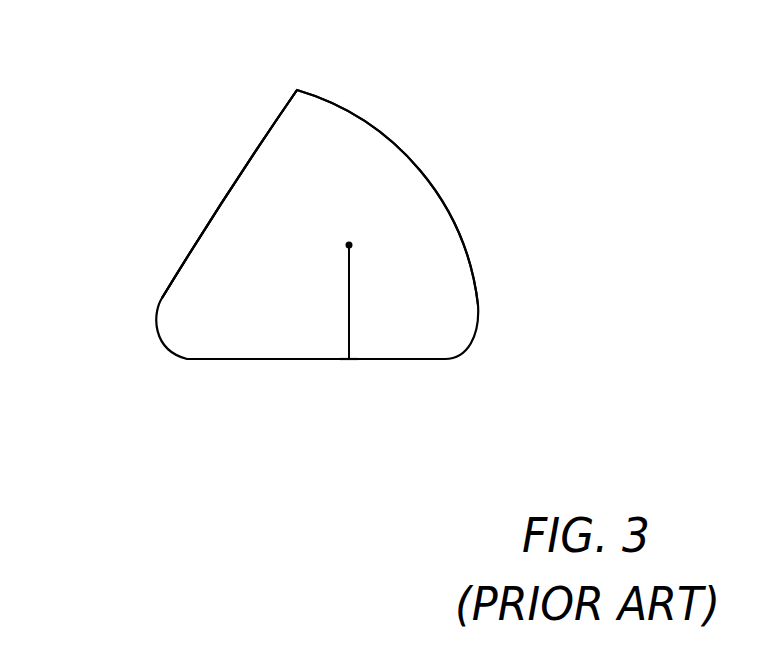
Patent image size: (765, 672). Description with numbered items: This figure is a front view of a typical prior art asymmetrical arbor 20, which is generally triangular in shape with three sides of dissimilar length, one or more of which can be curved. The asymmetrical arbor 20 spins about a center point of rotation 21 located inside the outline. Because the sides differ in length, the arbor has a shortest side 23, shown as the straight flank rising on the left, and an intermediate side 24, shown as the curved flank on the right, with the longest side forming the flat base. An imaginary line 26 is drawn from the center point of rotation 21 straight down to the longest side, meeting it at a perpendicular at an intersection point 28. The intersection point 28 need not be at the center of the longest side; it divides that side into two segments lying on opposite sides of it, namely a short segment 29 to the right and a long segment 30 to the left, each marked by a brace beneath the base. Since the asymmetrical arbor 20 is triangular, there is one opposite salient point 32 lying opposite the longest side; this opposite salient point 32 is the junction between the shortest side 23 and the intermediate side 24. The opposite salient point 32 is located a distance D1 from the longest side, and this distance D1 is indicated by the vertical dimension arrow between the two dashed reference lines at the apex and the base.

The asymmetrical arbor 20 is at (402, 156).
The center point of rotation 21 is at (351, 243).
The shortest side 23 is at (240, 172).
The intermediate side 24 is at (477, 281).
The imaginary line 26 is at (350, 300).
The intersection point 28 is at (349, 357).
The short segment 29 is at (450, 368).
The long segment 30 is at (344, 370).
The opposite salient point 32 is at (298, 89).
The distance D1 is at (258, 90).